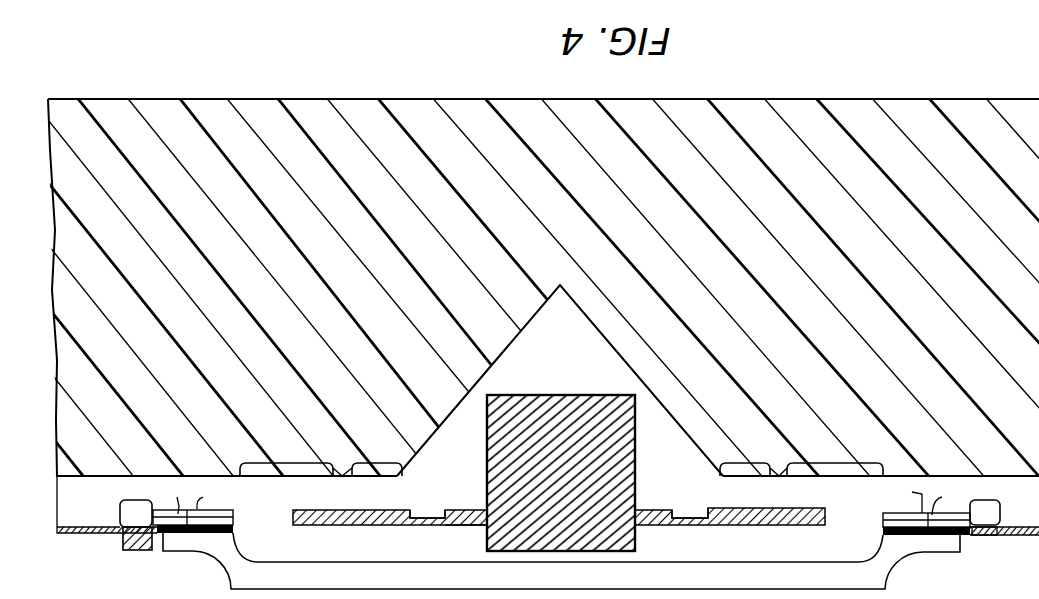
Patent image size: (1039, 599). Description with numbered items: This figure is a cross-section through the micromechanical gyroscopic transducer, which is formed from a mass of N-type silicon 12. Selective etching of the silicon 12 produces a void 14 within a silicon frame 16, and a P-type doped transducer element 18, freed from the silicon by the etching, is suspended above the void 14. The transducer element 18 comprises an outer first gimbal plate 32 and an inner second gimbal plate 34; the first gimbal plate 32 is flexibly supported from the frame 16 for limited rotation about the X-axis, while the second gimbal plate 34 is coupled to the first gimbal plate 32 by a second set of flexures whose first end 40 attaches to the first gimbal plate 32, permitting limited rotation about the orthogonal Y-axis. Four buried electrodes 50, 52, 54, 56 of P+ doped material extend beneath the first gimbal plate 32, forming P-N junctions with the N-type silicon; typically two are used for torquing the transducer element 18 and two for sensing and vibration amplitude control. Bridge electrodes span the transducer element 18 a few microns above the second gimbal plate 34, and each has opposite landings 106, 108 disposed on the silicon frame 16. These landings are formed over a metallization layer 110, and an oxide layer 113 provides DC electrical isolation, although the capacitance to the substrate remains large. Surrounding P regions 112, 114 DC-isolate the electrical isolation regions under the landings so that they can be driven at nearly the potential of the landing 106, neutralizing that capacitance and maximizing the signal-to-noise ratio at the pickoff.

The mass of N-type silicon 12 is at (196, 344).
The void 14 is at (572, 344).
The silicon frame 16 is at (80, 535).
The transducer element 18 is at (463, 528).
The first gimbal plate 32 is at (368, 526).
The second gimbal plate 34 is at (468, 510).
The first end of second flexure 40 is at (635, 538).
The buried electrode 50 is at (820, 463).
The buried electrode 52 is at (760, 463).
The buried electrode 54 is at (367, 463).
The buried electrode 56 is at (314, 463).
The electrode landing 106 is at (942, 553).
The electrode landing 108 is at (183, 552).
The metallization layer 110 is at (192, 553).
The P region 112 is at (237, 521).
The oxide layer 113 is at (233, 535).
The P region 114 is at (131, 550).